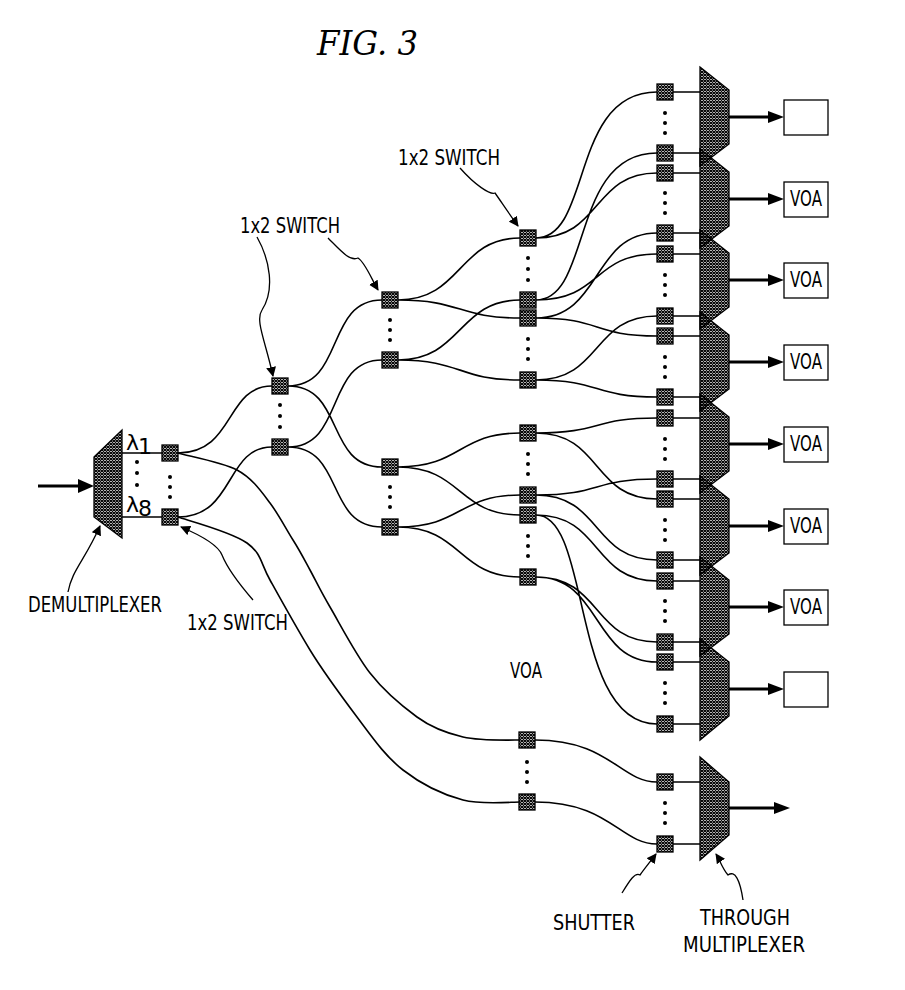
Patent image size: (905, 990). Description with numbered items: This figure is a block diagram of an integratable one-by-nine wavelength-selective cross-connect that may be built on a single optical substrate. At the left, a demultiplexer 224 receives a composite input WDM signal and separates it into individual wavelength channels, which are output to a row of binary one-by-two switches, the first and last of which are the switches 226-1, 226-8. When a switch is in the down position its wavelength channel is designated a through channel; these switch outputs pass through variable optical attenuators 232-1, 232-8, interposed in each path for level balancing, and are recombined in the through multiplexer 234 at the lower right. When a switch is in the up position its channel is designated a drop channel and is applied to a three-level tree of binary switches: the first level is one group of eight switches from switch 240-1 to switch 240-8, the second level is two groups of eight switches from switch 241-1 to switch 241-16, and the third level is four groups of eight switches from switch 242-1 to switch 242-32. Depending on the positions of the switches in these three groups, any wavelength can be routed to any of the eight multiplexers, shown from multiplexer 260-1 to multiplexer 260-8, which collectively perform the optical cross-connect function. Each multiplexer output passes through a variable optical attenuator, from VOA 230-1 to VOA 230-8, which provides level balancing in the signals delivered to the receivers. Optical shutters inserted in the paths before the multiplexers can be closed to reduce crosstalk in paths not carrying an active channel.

The demultiplexer 224 is at (108, 443).
The 1×2 switch 226-1 is at (170, 445).
The 1×2 switch 226-8 is at (170, 525).
The first-level switch 240-1 is at (281, 378).
The first-level switch 240-8 is at (281, 455).
The second-level switch 241-1 is at (391, 292).
The second-level switch 241-16 is at (390, 535).
The third-level switch 242-1 is at (528, 230).
The third-level switch 242-32 is at (528, 585).
The variable optical attenuator 232-1 is at (527, 732).
The variable optical attenuator 232-8 is at (527, 810).
The multiplexer 260-1 is at (713, 69).
The multiplexer 260-8 is at (729, 667).
The variable optical attenuator 230-1 is at (806, 100).
The variable optical attenuator 230-8 is at (806, 712).
The multiplexer 234 is at (729, 798).